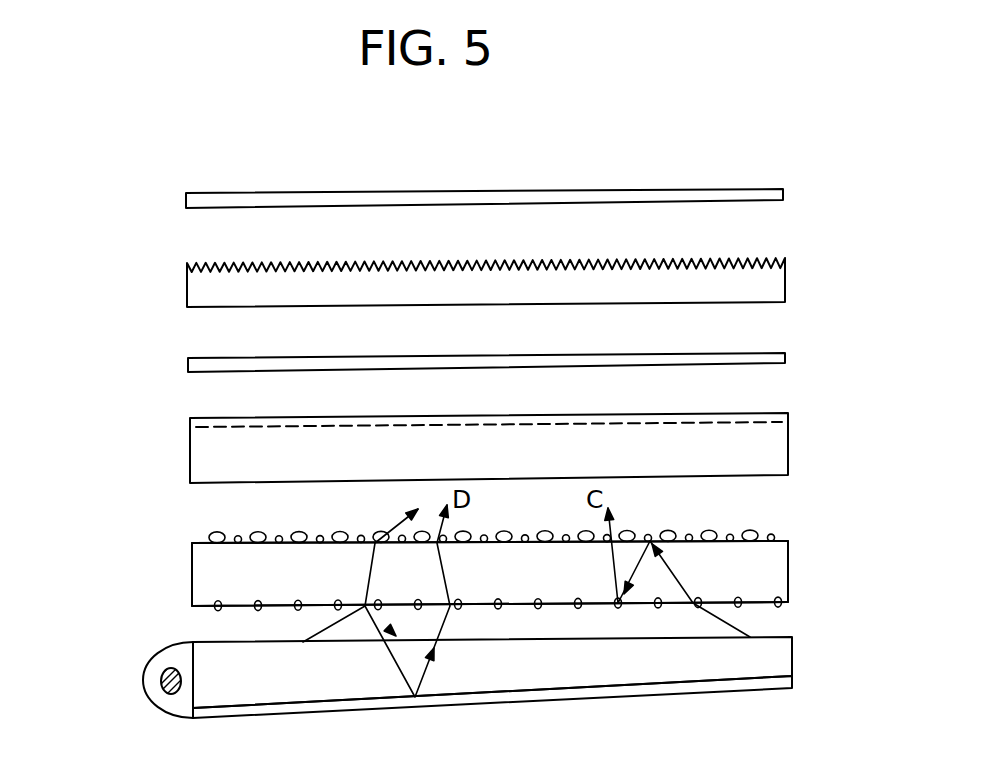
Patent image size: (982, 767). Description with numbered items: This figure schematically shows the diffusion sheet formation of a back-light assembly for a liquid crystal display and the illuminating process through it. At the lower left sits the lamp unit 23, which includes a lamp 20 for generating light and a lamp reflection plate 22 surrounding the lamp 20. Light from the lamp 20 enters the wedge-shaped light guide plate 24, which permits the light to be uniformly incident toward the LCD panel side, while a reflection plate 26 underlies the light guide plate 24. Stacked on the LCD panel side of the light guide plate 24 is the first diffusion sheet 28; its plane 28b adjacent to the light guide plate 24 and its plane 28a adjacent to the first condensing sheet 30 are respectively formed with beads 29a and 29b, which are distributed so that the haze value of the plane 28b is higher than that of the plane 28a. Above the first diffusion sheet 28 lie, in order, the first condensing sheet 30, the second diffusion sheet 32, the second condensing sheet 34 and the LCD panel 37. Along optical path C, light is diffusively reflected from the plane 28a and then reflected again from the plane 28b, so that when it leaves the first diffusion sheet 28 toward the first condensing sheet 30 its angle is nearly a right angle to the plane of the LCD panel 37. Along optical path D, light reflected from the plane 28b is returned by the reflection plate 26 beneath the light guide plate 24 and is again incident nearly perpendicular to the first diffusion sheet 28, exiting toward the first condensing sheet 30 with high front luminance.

The LCD panel 37 is at (783, 195).
The second condensing sheet 34 is at (785, 282).
The second diffusion sheet 32 is at (785, 358).
The first condensing sheet 30 is at (788, 445).
The beads 29a is at (766, 531).
The plane adjacent to the first condensing sheet 28a is at (788, 537).
The first diffusion sheet 28 is at (788, 571).
The plane adjacent to the light guide plate 28b is at (780, 602).
The beads 29b is at (781, 607).
The light guide plate 24 is at (792, 658).
The reflection plate 26 is at (792, 683).
The lamp unit 23 is at (65, 635).
The lamp reflection plate 22 is at (150, 662).
The lamp 20 is at (161, 681).